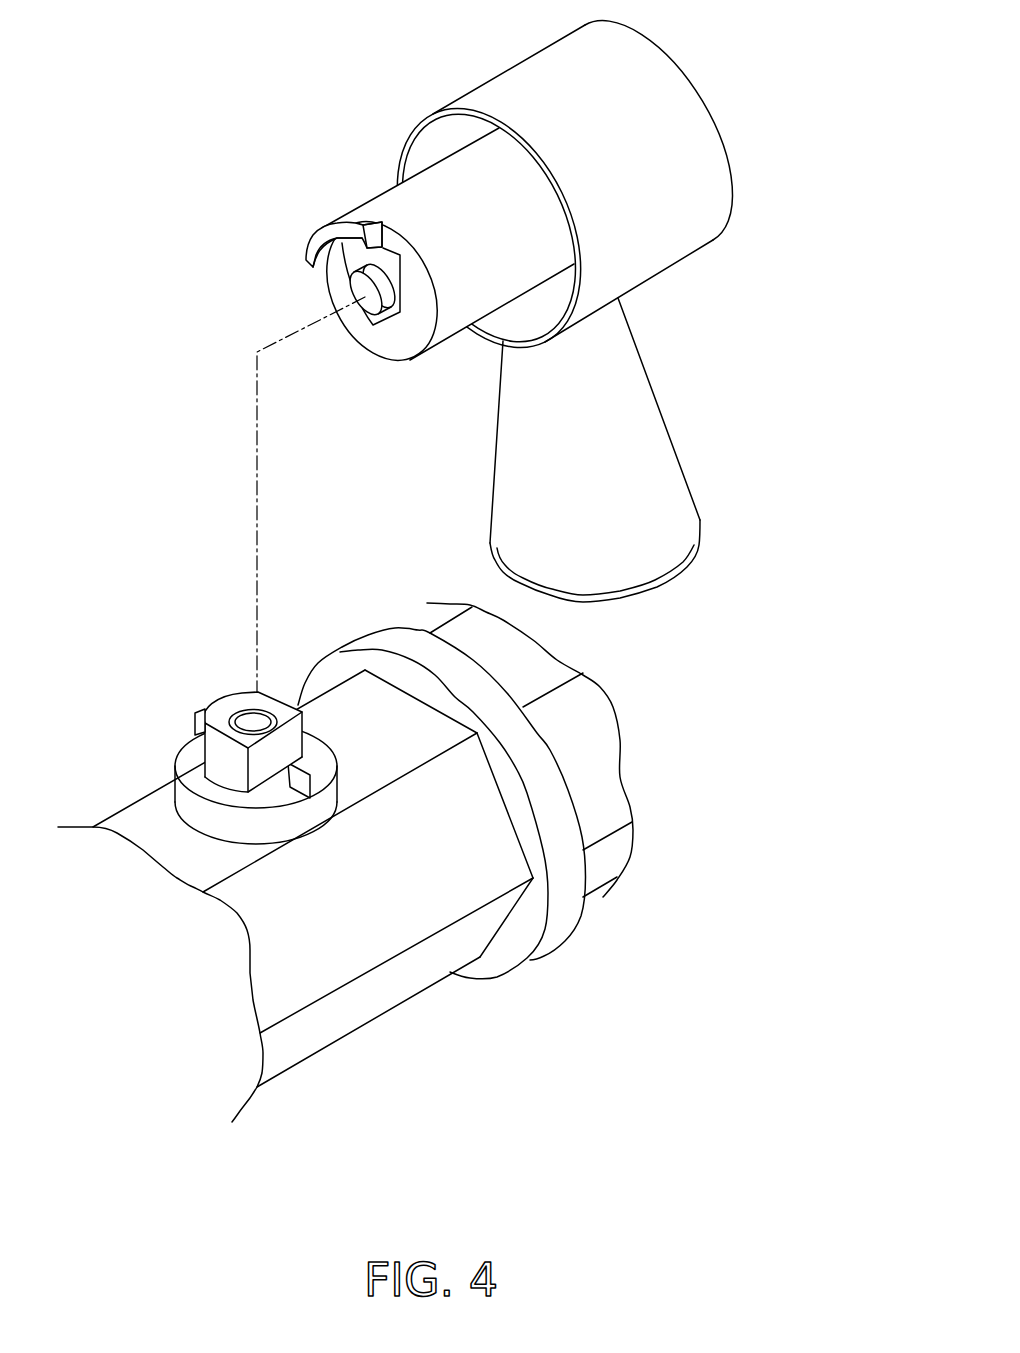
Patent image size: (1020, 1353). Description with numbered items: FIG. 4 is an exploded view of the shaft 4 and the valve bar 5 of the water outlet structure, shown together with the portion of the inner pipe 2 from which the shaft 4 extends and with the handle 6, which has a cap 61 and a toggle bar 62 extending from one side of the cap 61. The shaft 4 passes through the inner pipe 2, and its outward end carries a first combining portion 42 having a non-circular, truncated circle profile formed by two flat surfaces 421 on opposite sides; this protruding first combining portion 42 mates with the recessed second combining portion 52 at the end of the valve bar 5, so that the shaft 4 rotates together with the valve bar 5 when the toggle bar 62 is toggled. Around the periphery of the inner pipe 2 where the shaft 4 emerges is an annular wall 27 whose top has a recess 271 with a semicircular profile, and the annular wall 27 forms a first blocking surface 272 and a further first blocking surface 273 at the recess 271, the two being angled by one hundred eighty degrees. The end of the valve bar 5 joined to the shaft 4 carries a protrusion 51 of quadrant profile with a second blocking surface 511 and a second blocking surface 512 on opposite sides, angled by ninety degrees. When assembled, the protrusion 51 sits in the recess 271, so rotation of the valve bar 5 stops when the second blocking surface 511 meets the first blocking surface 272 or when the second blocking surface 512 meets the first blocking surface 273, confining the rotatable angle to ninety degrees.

The inner pipe 2 is at (386, 1001).
The shaft 4 is at (263, 758).
The valve bar 5 is at (402, 273).
The handle 6 is at (578, 311).
The annular wall 27 is at (263, 819).
The first combining portion 42 is at (235, 780).
The protrusion 51 is at (306, 216).
The second combining portion 52 is at (384, 332).
The cap 61 is at (703, 148).
The toggle bar 62 is at (660, 450).
The recess 271 is at (188, 758).
The first blocking surface 272 is at (203, 720).
The first blocking surface 273 is at (298, 787).
The flat surface 421 is at (261, 780).
The second blocking surface 511 is at (322, 262).
The second blocking surface 512 is at (373, 228).